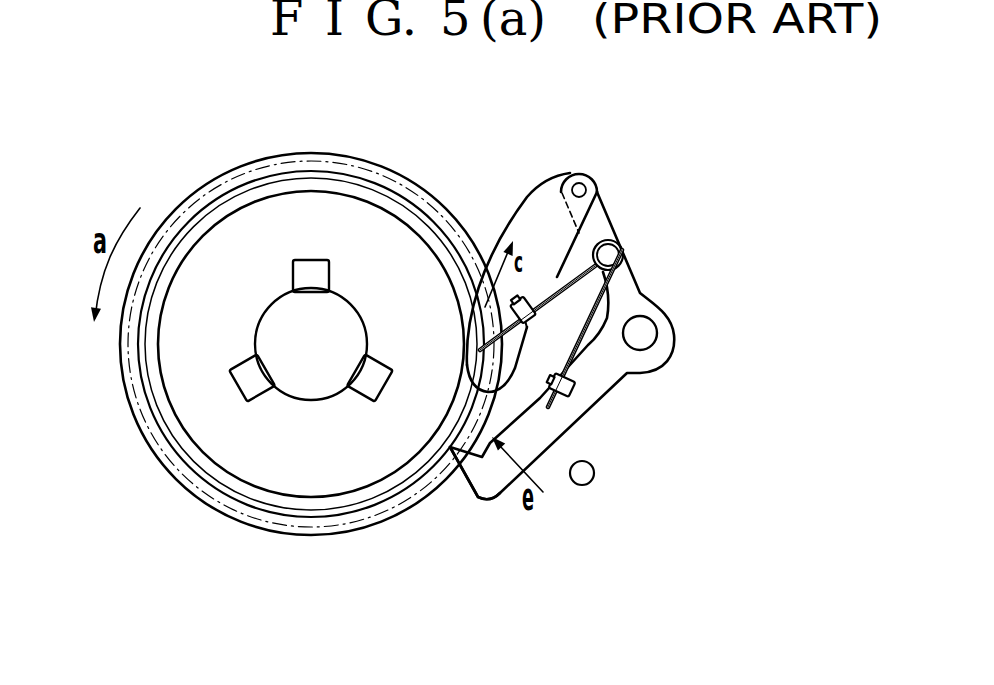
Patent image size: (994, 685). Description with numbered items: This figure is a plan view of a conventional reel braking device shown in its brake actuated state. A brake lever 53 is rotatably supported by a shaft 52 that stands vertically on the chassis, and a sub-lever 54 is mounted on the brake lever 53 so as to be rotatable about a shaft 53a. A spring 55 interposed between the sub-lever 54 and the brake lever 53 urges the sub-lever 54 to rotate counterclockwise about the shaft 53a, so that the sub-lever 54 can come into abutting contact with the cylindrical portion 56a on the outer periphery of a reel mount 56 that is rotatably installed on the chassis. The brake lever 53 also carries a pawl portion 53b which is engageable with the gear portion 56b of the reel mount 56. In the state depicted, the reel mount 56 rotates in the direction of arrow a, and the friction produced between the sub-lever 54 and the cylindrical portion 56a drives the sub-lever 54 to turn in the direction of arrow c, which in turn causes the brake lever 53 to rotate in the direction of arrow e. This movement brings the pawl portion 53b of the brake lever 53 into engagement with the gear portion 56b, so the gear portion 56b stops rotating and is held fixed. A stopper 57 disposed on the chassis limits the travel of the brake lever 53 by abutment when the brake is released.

The shaft 52 is at (647, 333).
The brake lever 53 is at (592, 373).
The shaft 53a is at (589, 186).
The pawl portion 53b is at (471, 465).
The sub-lever 54 is at (538, 226).
The spring 55 is at (585, 347).
The reel mount 56 is at (267, 330).
The cylindrical portion 56a is at (160, 387).
The gear portion 56b is at (155, 456).
The stopper 57 is at (590, 470).